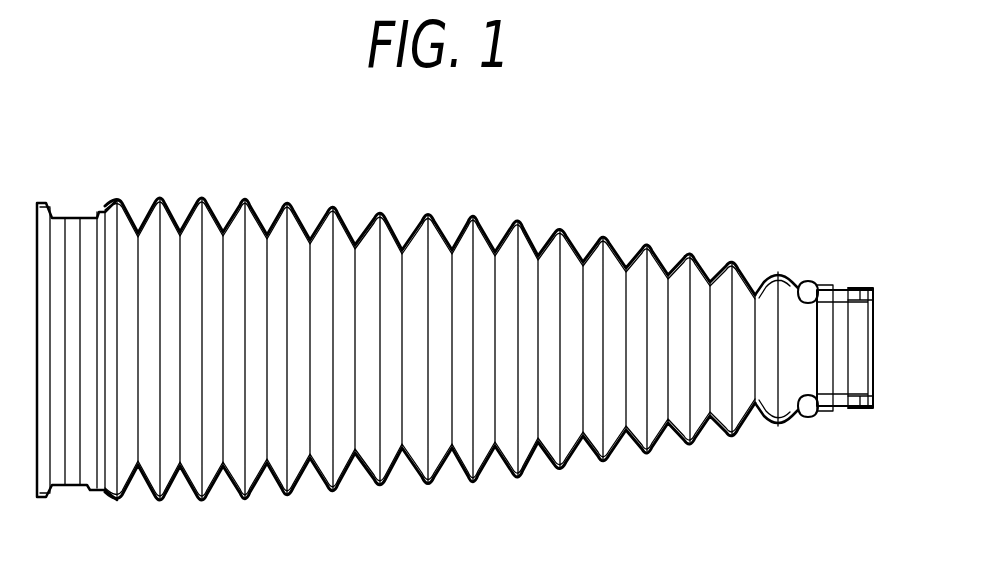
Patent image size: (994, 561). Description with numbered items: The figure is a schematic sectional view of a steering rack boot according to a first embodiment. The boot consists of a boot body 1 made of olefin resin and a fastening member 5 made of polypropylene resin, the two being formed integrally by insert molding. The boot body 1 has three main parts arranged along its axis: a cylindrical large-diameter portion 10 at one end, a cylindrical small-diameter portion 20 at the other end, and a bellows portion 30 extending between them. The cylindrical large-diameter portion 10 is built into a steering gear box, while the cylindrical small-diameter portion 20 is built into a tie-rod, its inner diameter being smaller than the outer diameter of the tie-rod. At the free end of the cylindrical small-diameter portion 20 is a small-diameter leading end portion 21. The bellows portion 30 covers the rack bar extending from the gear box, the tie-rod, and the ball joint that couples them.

The boot body 1 is at (537, 222).
The cylindrical large-diameter portion 10 is at (66, 218).
The bellows portion 30 is at (381, 208).
The fastening member 5 is at (834, 288).
The cylindrical small-diameter portion 20 is at (837, 408).
The small-diameter leading end portion 21 is at (881, 290).